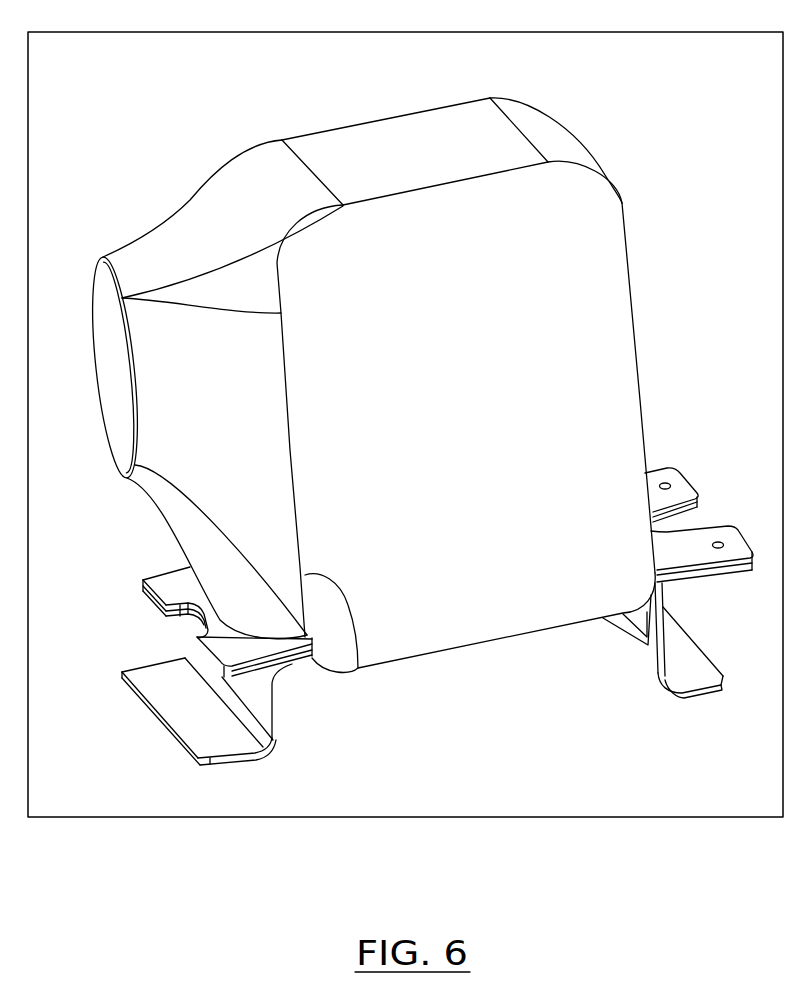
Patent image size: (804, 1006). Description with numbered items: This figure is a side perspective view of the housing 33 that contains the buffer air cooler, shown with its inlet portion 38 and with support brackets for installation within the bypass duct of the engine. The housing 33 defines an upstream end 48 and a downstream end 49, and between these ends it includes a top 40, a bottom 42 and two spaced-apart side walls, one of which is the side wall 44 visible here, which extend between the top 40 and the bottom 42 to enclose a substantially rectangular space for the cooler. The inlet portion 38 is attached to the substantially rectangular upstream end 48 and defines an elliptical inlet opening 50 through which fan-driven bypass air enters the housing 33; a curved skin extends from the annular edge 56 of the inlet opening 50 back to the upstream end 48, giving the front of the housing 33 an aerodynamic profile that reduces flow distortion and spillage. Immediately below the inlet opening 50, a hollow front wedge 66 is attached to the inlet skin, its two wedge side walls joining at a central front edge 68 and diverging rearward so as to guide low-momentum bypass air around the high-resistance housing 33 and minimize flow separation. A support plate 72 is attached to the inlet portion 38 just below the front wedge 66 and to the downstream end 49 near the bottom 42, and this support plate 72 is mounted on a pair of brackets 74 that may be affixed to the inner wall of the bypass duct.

The housing 33 is at (593, 198).
The inlet portion 38 is at (183, 207).
The top 40 is at (412, 137).
The bottom 42 is at (497, 640).
The side wall 44 is at (592, 277).
The upstream end 48 is at (357, 672).
The downstream end 49 is at (638, 327).
The inlet opening 50 is at (107, 298).
The annular edge 56 is at (100, 392).
The front wedge 66 is at (170, 512).
The central front edge 68 is at (150, 497).
The support plate 72 is at (158, 580).
The bracket 74 is at (273, 718).